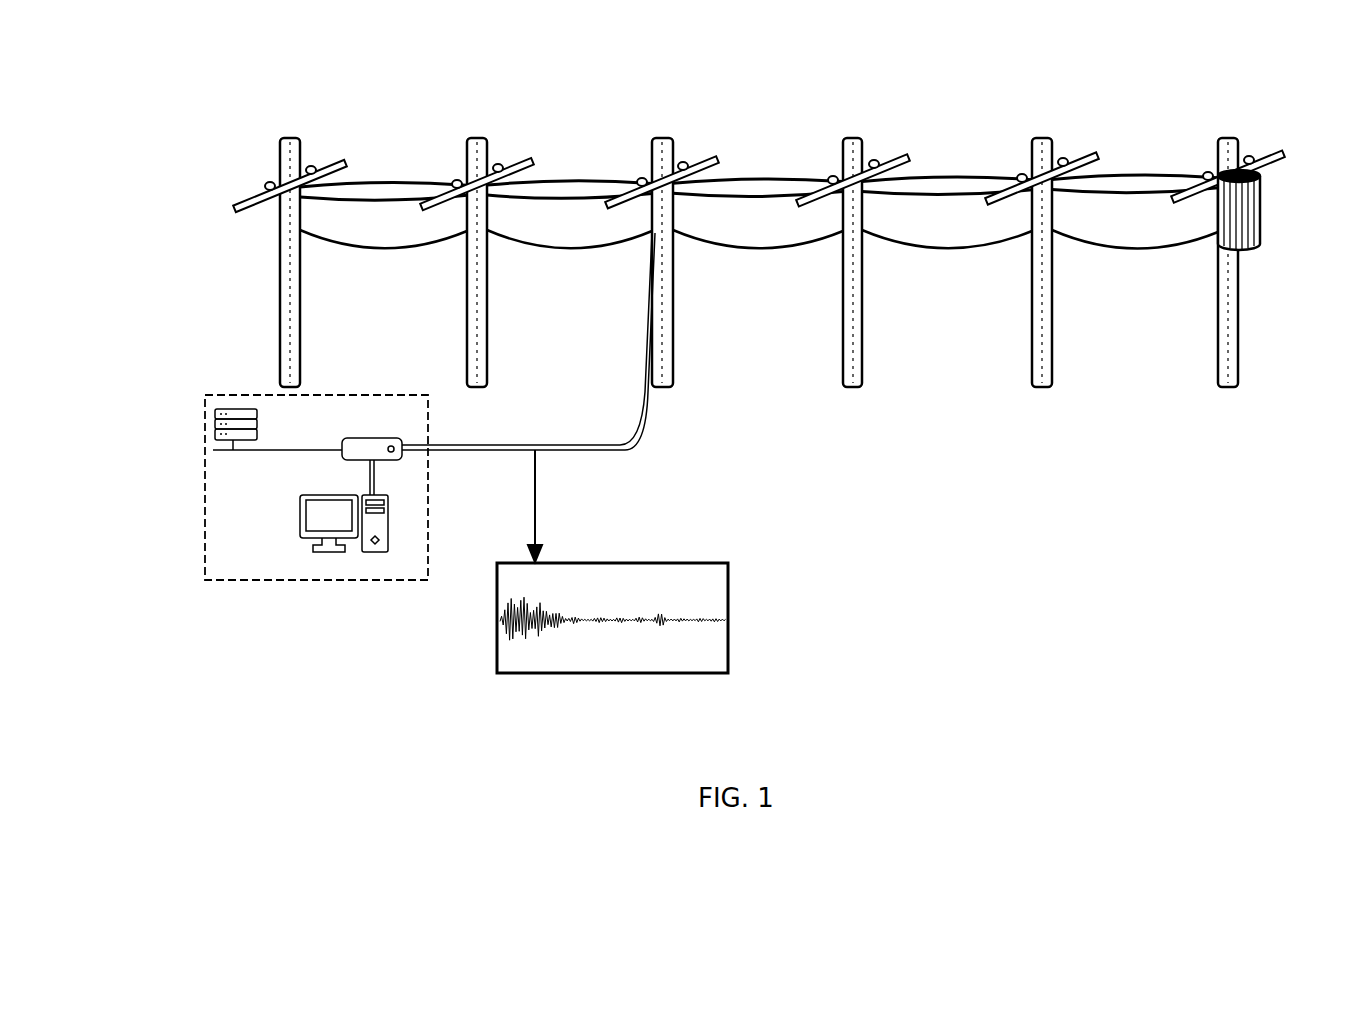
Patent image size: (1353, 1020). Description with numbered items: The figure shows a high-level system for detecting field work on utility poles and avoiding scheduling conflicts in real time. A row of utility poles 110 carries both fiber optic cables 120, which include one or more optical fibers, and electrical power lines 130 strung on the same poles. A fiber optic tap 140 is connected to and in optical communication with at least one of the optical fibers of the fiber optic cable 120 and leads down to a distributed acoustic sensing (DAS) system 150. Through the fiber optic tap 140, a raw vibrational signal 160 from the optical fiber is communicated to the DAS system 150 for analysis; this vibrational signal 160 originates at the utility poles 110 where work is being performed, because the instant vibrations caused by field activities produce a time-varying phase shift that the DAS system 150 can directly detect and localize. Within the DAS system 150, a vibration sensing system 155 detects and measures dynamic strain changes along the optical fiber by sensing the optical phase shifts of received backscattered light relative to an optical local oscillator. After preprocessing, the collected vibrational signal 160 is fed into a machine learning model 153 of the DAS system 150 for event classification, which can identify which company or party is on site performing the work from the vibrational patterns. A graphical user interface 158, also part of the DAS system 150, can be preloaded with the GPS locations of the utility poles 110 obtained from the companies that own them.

The utility poles 110 is at (280, 317).
The fiber optic cables 120 is at (373, 251).
The electrical power lines 130 is at (380, 181).
The fiber optic tap 140 is at (637, 447).
The distributed acoustic sensing (DAS) system 150 is at (317, 580).
The machine learning model 153 is at (230, 437).
The vibration sensing system 155 is at (385, 452).
The graphical user interface (GUI) 158 is at (368, 543).
The vibrational signal 160 is at (563, 673).